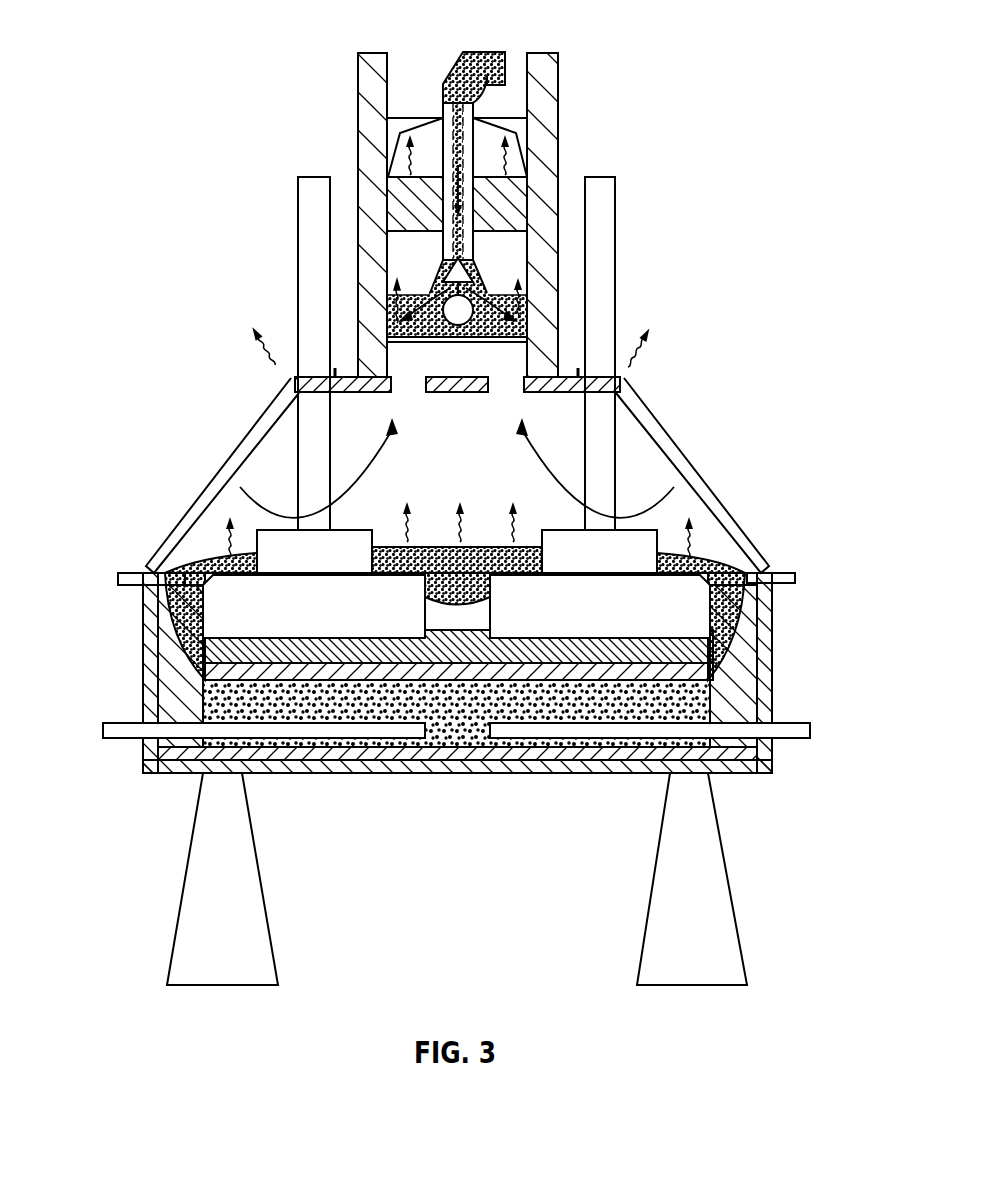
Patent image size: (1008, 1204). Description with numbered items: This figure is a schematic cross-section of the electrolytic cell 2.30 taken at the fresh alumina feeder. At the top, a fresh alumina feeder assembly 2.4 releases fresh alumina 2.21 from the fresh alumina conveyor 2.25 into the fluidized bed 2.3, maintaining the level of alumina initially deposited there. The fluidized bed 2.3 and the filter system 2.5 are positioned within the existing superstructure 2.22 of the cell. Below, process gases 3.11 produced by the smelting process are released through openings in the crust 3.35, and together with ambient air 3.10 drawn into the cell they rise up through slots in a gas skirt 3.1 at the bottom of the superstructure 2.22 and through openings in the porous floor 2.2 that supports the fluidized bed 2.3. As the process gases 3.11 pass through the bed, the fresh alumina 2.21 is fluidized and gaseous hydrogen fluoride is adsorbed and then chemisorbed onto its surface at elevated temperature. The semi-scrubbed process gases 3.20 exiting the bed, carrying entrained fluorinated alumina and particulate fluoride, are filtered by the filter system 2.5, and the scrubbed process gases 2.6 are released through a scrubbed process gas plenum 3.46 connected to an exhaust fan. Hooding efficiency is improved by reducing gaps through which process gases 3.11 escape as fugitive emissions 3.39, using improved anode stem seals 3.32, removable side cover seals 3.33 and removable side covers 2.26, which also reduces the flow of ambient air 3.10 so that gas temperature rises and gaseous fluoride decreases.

The fresh alumina 2.21 is at (461, 67).
The superstructure 2.22 is at (560, 66).
The fresh alumina conveyor 2.25 is at (496, 53).
The fresh alumina feeder assembly 2.4 is at (482, 252).
The filter system 2.5 is at (513, 203).
The scrubbed process gases 2.6 is at (404, 162).
The scrubbed process gas plenum 3.46 is at (500, 134).
The semi-scrubbed process gases 3.20 is at (393, 285).
The fluidized bed 2.3 is at (410, 327).
The porous floor 2.2 is at (410, 349).
The anode stem seals 3.32 is at (297, 378).
The removable side cover seals 3.33 is at (623, 378).
The crust 3.35 is at (200, 548).
The fugitive emissions 3.39 is at (254, 328).
The ambient air 3.10 is at (201, 455).
The gas skirt 3.1 is at (378, 387).
The process gases 3.11 is at (460, 523).
The removable side covers 2.26 is at (168, 560).
The electrolytic cell 2.30 is at (775, 757).